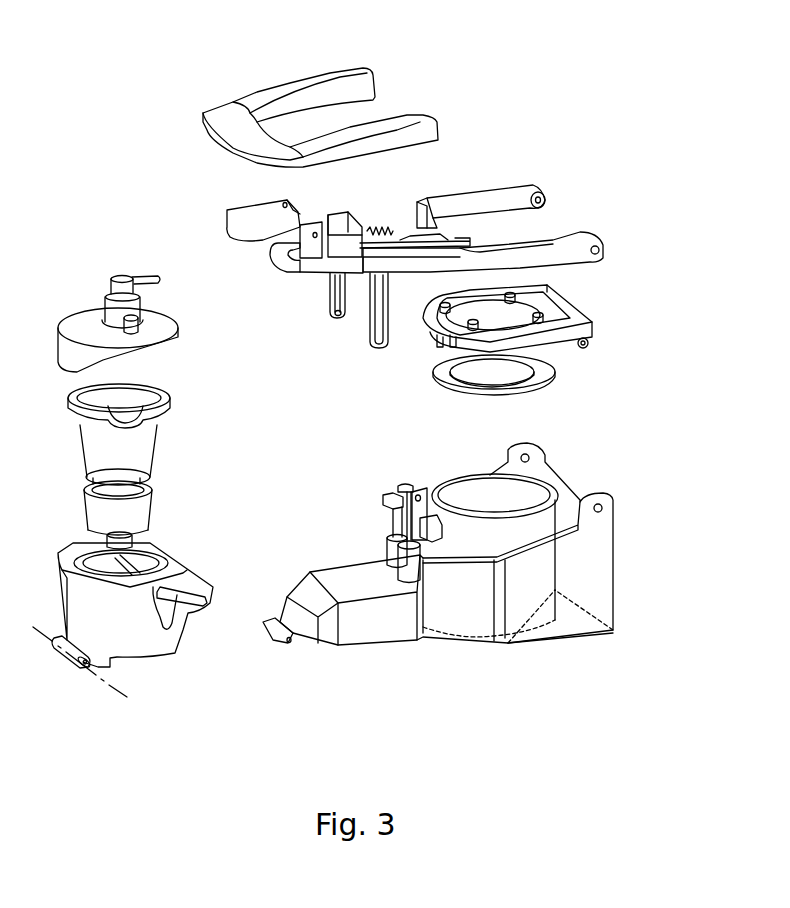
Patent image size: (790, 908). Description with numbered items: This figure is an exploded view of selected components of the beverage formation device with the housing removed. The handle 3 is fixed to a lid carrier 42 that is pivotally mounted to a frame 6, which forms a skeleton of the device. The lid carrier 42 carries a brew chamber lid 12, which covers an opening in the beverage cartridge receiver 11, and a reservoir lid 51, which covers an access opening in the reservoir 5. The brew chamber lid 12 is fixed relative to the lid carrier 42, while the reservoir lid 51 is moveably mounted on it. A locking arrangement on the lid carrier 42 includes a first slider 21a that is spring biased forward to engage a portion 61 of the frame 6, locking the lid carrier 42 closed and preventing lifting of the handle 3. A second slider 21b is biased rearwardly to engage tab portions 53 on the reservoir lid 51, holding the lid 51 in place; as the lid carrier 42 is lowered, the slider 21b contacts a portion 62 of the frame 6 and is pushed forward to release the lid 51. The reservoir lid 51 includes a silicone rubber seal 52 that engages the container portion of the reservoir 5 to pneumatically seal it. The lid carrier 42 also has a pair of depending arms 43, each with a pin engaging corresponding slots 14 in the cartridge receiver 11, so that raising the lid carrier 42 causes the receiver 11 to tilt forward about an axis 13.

The handle 3 is at (217, 112).
The lid carrier 42 is at (507, 197).
The first slider 21a is at (450, 240).
The second slider 21b is at (436, 233).
The depending arms 43 is at (370, 337).
The brew chamber lid 12 is at (80, 315).
The beverage cartridge receiver 11 is at (177, 405).
The slots 14 is at (175, 627).
The axis 13 is at (117, 690).
The frame 6 is at (607, 567).
The reservoir 5 is at (520, 620).
The portion of the frame 61 is at (383, 497).
The portion of the frame 62 is at (412, 487).
The reservoir lid 51 is at (568, 287).
The tab portions 53 is at (443, 343).
The silicone rubber seal 52 is at (437, 390).